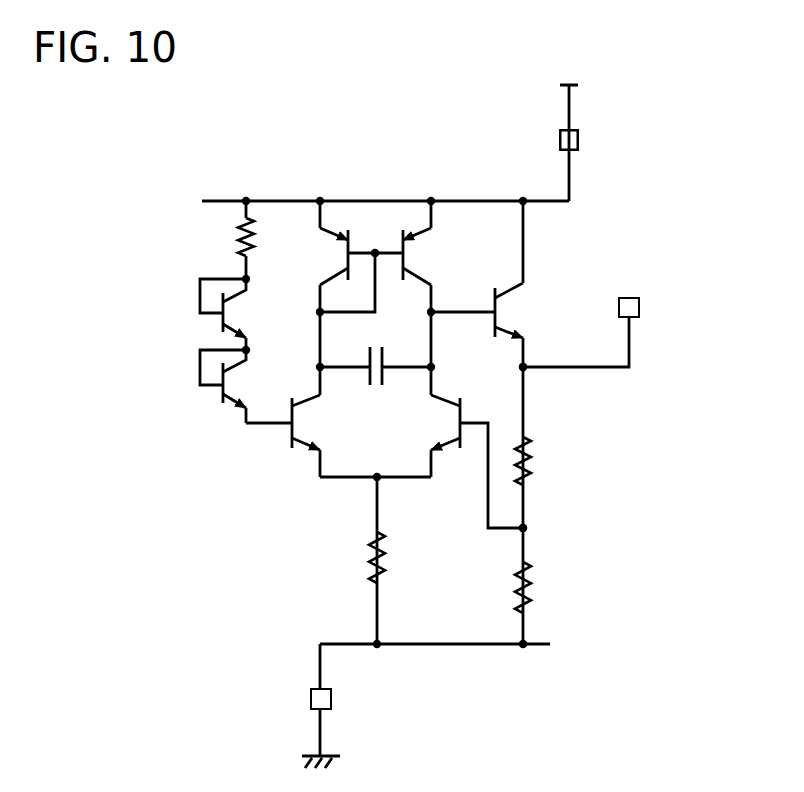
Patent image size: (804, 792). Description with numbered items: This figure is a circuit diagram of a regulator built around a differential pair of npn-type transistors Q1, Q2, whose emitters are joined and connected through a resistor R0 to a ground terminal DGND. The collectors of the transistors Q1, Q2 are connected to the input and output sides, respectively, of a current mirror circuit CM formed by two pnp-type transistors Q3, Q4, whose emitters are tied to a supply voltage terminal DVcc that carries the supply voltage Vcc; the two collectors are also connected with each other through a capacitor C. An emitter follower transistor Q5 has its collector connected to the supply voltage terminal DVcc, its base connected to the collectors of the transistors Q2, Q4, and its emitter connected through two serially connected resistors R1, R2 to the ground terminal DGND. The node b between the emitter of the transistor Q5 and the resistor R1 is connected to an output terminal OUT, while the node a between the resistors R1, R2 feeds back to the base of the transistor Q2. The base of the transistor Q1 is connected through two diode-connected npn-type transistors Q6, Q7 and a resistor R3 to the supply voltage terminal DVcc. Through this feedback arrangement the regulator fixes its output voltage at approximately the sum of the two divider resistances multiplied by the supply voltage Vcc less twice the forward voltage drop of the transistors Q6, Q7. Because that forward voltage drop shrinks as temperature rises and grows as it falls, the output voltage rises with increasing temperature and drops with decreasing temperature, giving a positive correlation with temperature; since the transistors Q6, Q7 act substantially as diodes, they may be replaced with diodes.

The supply voltage Vcc is at (618, 112).
The supply voltage terminal DVcc is at (579, 141).
The current mirror circuit CM is at (373, 215).
The resistor R3 is at (238, 249).
The pnp-type transistor Q3 is at (340, 246).
The pnp-type transistor Q4 is at (412, 257).
The diode-connected npn-type transistor Q6 is at (230, 313).
The diode-connected npn-type transistor Q7 is at (230, 385).
The npn-type transistor Q1 is at (300, 423).
The npn-type transistor Q2 is at (455, 427).
The capacitor C is at (378, 340).
The emitter follower transistor Q5 is at (500, 312).
The output terminal OUT is at (657, 303).
The node b is at (527, 372).
The resistor R1 is at (535, 466).
The node a is at (526, 531).
The resistor R2 is at (510, 586).
The resistor R0 is at (392, 562).
The ground terminal DGND is at (332, 699).